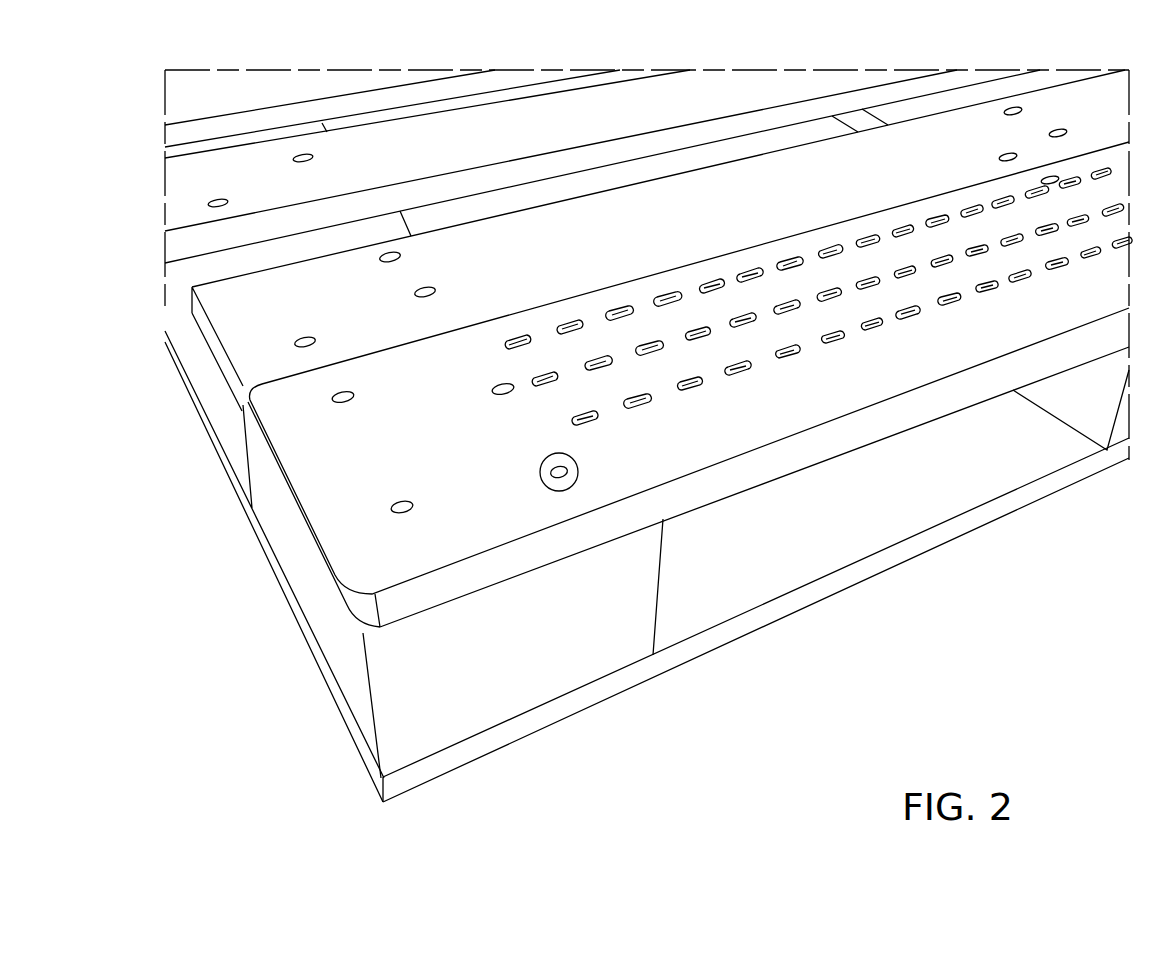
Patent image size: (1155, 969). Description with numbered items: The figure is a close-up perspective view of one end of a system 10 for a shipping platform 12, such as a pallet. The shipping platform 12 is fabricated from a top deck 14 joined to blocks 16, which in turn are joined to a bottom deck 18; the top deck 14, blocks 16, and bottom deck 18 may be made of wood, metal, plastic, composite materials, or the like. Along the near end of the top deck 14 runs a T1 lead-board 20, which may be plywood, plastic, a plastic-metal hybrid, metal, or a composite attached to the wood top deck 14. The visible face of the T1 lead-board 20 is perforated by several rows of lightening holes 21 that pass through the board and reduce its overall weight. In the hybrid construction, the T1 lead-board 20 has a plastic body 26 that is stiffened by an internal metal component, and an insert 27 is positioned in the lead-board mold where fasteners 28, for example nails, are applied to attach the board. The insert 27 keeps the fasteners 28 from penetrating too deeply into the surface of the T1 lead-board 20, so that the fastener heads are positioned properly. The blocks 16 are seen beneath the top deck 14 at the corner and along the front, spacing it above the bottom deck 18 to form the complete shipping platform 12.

The system 10 is at (776, 745).
The shipping platform 12 is at (255, 545).
The top deck 14 is at (357, 331).
The blocks 16 is at (340, 672).
The bottom deck 18 is at (930, 540).
The T1 lead-board 20 is at (763, 468).
The lightening holes 21 is at (668, 297).
The plastic body 26 is at (927, 407).
The insert 27 is at (560, 452).
The fasteners 28 is at (500, 380).